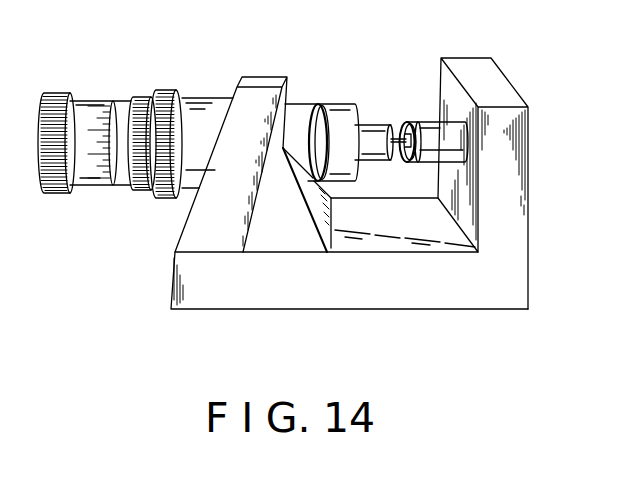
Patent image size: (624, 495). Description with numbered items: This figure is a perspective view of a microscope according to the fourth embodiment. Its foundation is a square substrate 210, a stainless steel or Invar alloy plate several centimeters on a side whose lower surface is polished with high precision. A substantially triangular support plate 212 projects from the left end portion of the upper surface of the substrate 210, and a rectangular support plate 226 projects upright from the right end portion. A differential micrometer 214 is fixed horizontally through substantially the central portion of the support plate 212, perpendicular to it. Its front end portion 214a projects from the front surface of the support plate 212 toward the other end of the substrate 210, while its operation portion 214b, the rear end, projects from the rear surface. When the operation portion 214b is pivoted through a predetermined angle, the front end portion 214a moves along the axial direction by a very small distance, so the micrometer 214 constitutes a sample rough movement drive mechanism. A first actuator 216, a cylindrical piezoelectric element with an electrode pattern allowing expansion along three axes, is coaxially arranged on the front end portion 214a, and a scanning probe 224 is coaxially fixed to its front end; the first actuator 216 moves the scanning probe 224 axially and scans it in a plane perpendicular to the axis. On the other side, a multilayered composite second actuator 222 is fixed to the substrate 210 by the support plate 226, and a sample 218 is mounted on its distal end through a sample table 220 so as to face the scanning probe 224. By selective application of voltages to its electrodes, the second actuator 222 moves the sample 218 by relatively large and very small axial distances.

The substrate 210 is at (248, 300).
The support plate 212 is at (182, 240).
The differential micrometer 214 is at (212, 98).
The front end portion 214a is at (333, 118).
The operation portion 214b is at (83, 104).
The first actuator 216 is at (370, 128).
The sample 218 is at (411, 125).
The sample table 220 is at (453, 122).
The second actuator 222 is at (466, 90).
The scanning probe 224 is at (404, 134).
The support plate 226 is at (517, 180).